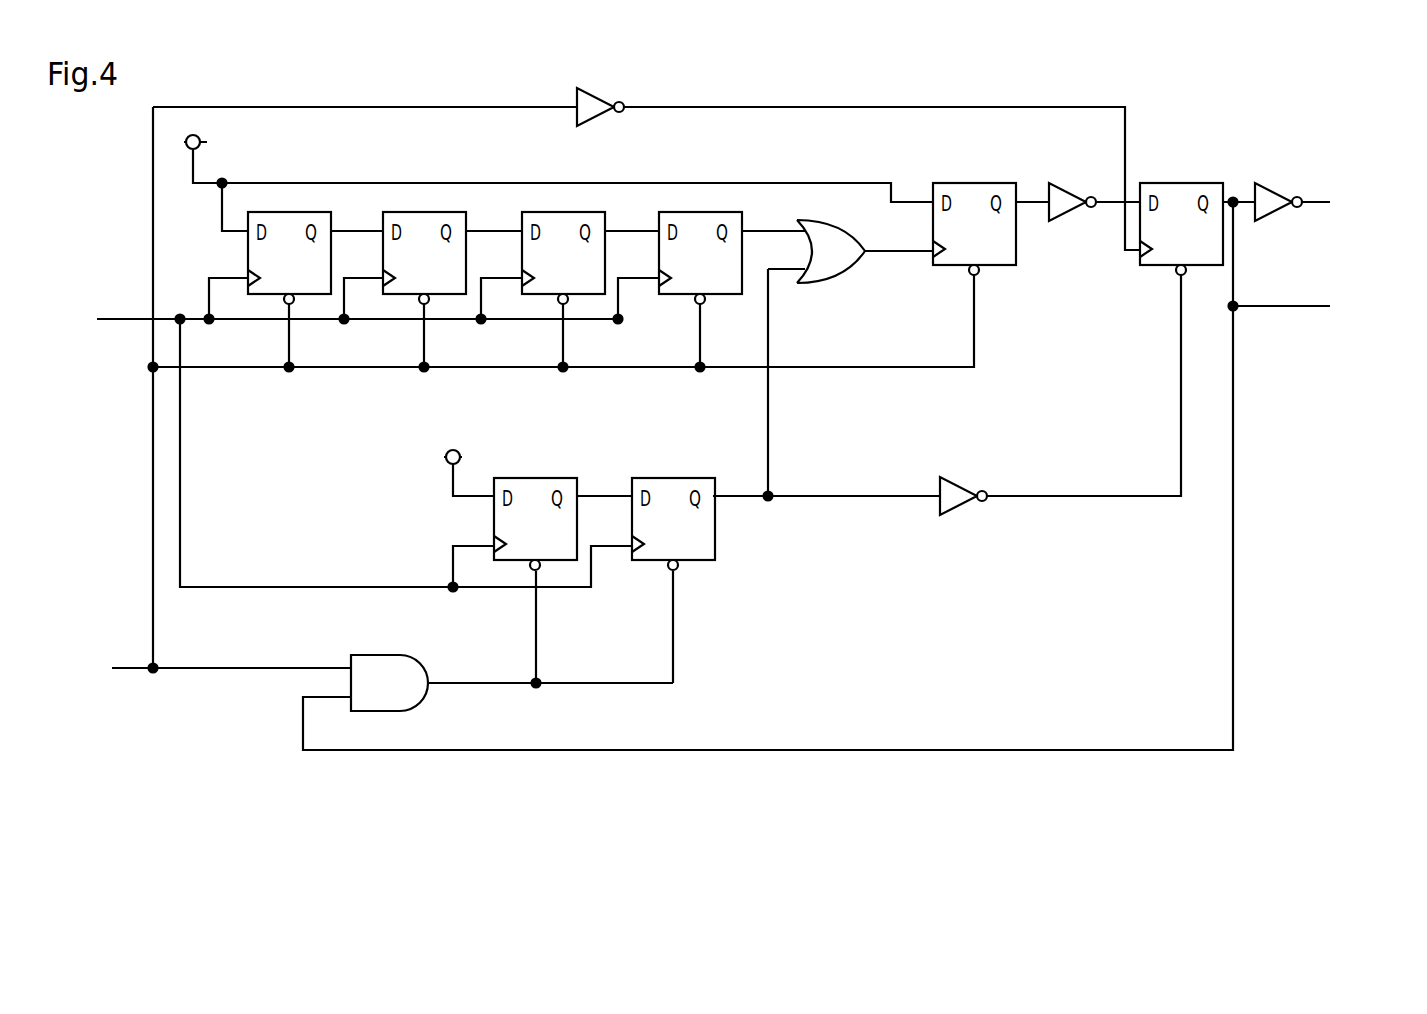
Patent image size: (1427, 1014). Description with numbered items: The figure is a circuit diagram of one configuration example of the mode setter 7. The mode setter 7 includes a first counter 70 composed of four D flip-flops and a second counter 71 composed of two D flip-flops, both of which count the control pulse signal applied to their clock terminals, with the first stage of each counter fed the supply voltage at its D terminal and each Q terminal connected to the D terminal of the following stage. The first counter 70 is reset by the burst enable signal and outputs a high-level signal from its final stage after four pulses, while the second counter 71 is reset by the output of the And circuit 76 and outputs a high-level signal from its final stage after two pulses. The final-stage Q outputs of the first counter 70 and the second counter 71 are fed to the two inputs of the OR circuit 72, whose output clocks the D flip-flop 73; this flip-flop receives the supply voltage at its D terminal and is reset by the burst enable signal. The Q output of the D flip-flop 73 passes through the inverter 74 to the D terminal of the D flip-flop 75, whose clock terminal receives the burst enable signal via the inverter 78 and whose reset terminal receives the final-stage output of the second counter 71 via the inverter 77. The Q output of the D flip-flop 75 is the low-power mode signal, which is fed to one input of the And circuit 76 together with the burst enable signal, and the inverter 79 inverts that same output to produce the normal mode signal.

The mode setter 7 is at (1080, 58).
The first counter 70 is at (732, 307).
The second counter 71 is at (720, 573).
The OR circuit 72 is at (822, 221).
The D flip-flop 73 is at (992, 183).
The inverter 74 is at (1053, 185).
The D flip-flop 75 is at (1198, 183).
The AND circuit 76 is at (407, 656).
The inverter 77 is at (955, 485).
The inverter 78 is at (594, 94).
The inverter 79 is at (1270, 193).